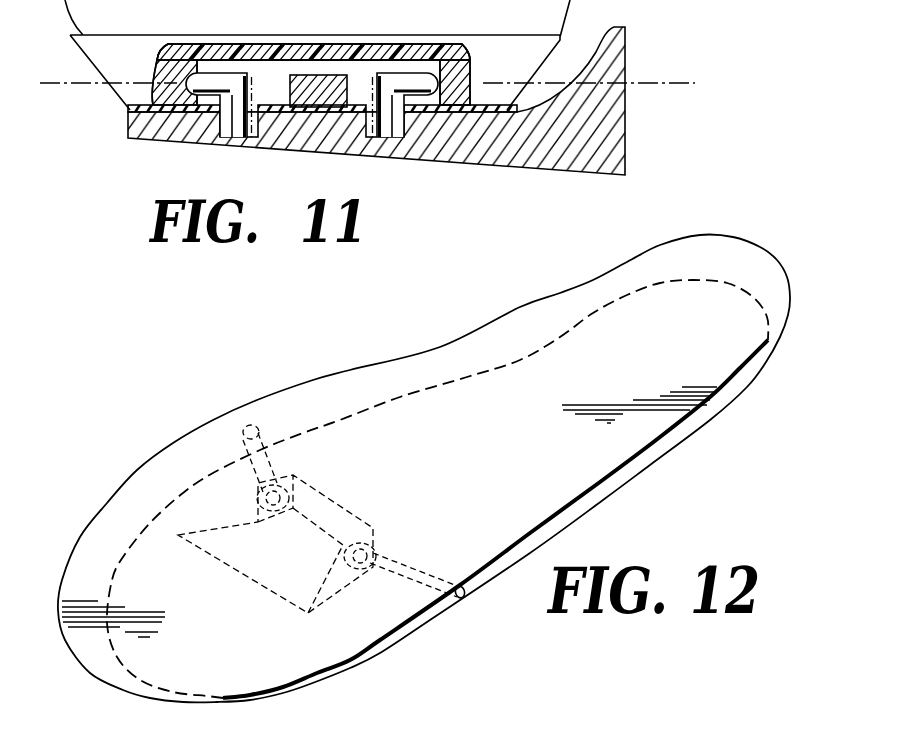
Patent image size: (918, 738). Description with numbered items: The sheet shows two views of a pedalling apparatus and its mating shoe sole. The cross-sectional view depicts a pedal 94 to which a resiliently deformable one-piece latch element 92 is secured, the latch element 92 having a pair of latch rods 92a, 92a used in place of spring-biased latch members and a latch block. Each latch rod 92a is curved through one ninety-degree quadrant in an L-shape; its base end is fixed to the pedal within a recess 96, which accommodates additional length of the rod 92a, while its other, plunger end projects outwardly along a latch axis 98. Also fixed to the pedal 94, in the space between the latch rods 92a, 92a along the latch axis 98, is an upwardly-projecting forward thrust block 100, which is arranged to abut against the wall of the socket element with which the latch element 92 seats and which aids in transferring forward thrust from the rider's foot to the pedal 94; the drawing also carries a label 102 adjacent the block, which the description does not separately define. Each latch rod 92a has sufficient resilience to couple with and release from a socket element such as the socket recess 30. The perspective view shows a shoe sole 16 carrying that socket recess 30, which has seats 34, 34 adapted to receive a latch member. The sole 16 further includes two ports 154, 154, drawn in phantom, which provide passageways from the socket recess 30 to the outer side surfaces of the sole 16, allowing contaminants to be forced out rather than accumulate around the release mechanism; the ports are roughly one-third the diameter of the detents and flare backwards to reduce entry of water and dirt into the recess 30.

In FIG. 12, the shoe sole 16 is at (150, 482).
In FIG. 12, the socket recess 30 is at (271, 552).
In FIG. 12, the seats 34 is at (256, 508).
In FIG. 12, the ports 154 is at (240, 450).
In FIG. 11, the latch element 92 is at (407, 72).
In FIG. 11, the latch rods 92a is at (230, 119).
In FIG. 11, the pedal 94 is at (532, 152).
In FIG. 11, the recess 96 is at (262, 127).
In FIG. 11, the latch axis 98 is at (653, 83).
In FIG. 11, the forward thrust block 100 is at (320, 77).
In FIG. 11, the recess 102 is at (273, 72).